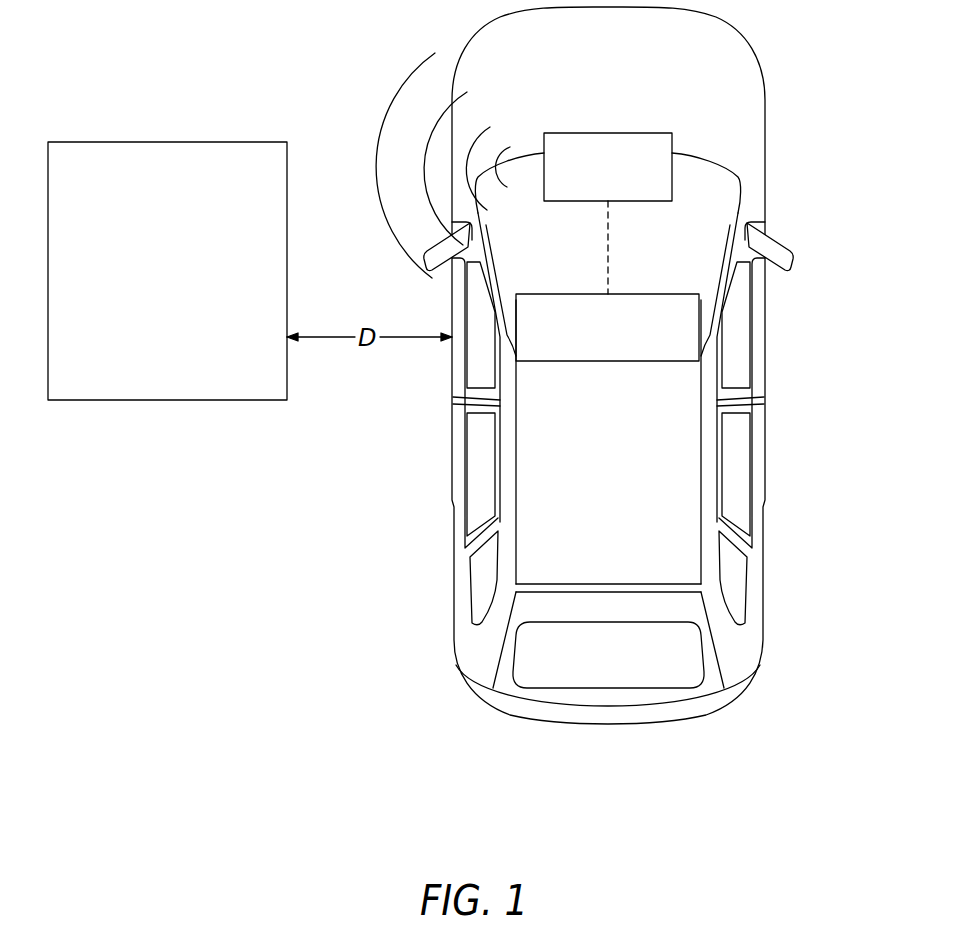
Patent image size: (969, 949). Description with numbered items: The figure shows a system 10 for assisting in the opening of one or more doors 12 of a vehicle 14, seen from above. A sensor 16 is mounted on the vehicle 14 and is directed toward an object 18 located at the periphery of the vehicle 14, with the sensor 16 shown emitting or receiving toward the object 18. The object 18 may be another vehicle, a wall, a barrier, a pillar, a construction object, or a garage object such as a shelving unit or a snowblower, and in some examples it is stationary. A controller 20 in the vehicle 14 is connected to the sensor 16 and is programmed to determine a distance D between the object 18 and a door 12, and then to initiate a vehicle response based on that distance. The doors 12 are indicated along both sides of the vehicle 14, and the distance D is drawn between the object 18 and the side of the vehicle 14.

The system 10 is at (868, 218).
The door 12 is at (465, 480).
The vehicle 14 is at (767, 140).
The sensor 16 is at (648, 133).
The object 18 is at (253, 140).
The controller 20 is at (676, 293).